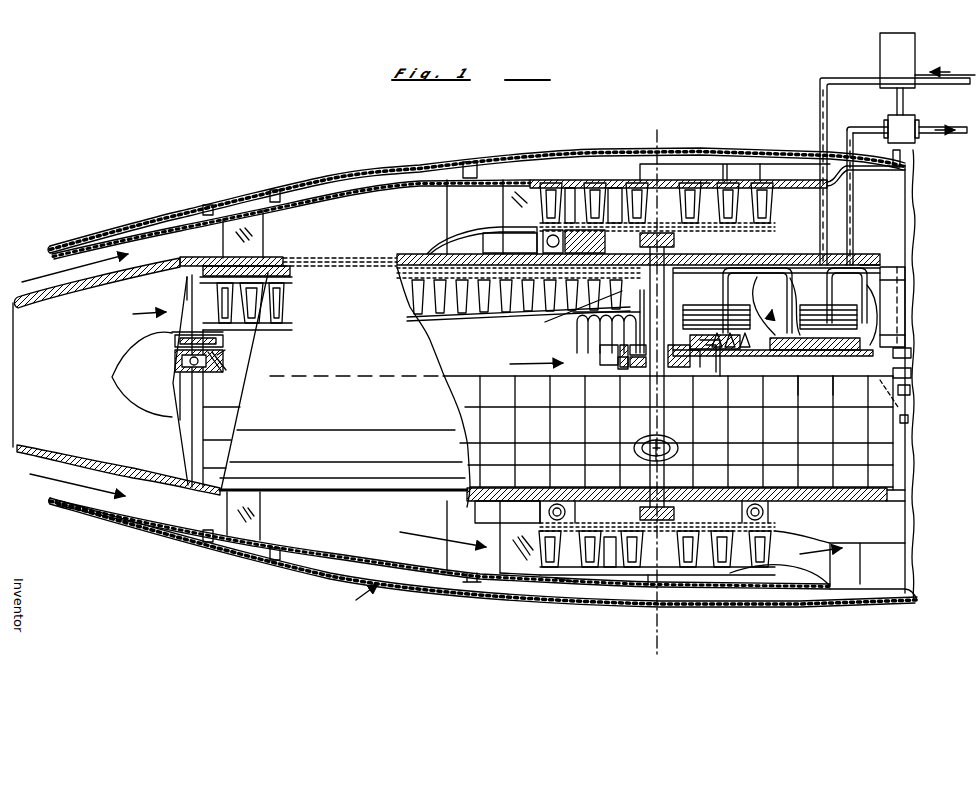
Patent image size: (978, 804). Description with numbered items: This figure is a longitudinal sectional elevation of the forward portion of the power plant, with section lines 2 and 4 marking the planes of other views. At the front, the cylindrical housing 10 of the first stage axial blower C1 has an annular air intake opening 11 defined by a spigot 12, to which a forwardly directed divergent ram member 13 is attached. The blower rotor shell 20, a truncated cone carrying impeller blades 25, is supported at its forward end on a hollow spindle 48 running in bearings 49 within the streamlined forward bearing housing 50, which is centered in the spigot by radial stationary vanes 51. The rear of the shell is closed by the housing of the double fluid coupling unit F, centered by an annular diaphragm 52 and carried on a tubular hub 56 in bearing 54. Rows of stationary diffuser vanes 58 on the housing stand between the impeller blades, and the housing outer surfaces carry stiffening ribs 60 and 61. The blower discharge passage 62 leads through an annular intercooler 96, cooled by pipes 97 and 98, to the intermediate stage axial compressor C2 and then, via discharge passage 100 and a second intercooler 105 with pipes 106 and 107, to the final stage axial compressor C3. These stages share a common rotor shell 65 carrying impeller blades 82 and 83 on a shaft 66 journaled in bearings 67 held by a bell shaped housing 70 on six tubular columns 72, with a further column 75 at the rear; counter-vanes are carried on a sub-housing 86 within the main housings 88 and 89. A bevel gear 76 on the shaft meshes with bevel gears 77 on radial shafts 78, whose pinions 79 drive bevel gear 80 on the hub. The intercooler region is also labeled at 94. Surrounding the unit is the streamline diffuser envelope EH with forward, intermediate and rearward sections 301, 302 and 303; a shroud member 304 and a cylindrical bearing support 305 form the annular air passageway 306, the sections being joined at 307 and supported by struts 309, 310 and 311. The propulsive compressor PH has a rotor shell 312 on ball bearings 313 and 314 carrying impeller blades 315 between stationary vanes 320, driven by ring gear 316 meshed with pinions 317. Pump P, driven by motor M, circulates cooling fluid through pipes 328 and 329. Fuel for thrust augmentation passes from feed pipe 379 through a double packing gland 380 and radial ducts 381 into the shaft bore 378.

The cylindrical housing 10 is at (286, 280).
The annular air intake opening 11 is at (140, 313).
The spigot 12 is at (192, 432).
The divergent ram member 13 is at (60, 407).
The rotor shell 20 is at (490, 314).
The impeller blades 25 is at (252, 321).
The hollow spindle 48 is at (185, 372).
The bearings 49 is at (212, 373).
The forward bearing housing 50 is at (175, 330).
The stationary vanes 51 is at (190, 292).
The annular diaphragm 52 is at (600, 322).
The bearing 54 is at (620, 370).
The tubular hub 56 is at (636, 372).
The stationary diffuser vanes 58 is at (420, 308).
The ribs 60 is at (722, 400).
The ribs 61 is at (808, 404).
The annular passage 62 is at (576, 311).
The common rotor shell 65 is at (800, 380).
The shaft 66 is at (912, 392).
The bearings 67 is at (700, 372).
The bell shaped housing 70 is at (730, 305).
The tubular columns 72 is at (638, 318).
The tubular column 75 is at (908, 280).
The bevel gear 76 is at (666, 368).
The bevel gears 77 is at (628, 348).
The radial shafts 78 is at (615, 250).
The pinions 79 is at (628, 362).
The bevel gear 80 is at (648, 400).
The impeller blades 82 is at (742, 348).
The impeller blades 83 is at (820, 350).
The cylindrical sub-housing 86 is at (785, 297).
The intermediate stage compressor housing 88 is at (735, 208).
The final stage compressor housing 89 is at (862, 266).
The passage 94 is at (738, 345).
The intercooler 96 is at (722, 268).
The pipe 97 is at (820, 85).
The pipe 98 is at (760, 262).
The annular discharge passage 100 is at (840, 292).
The second intercooler 105 is at (905, 300).
The pipe 106 is at (853, 215).
The pipe 107 is at (862, 127).
The forward divergent section 301 is at (270, 556).
The intermediate section 302 is at (568, 590).
The rearward convergent section 303 is at (918, 597).
The cylindrical shroud member 304 is at (318, 480).
The cylindrical bearing support 305 is at (503, 520).
The annular air passageway 306 is at (332, 205).
The joint 307 is at (470, 164).
The streamlined strut 309 is at (240, 230).
The streamlined strut 310 is at (522, 580).
The streamlined strut 311 is at (800, 565).
The inner rotor shell 312 is at (704, 545).
The ball bearing 313 is at (560, 498).
The ball bearing 314 is at (758, 503).
The impeller blades 315 is at (648, 588).
The ring gear 316 is at (612, 178).
The pinions 317 is at (636, 210).
The stationary vanes 320 is at (620, 578).
The pipe 328 is at (921, 125).
The outlet pipe 329 is at (922, 78).
The central bore 378 is at (909, 422).
The lateral feed pipe 379 is at (902, 155).
The double packing gland 380 is at (912, 352).
The radial ducts 381 is at (912, 374).
The section line 2- 2 is at (620, 143).
The section line 4- 4 is at (495, 206).
The motor M is at (897, 74).
The pump P is at (901, 129).
The double fluid coupling unit F is at (530, 364).
The first stage axial blower C1 is at (478, 364).
The intermediate stage axial compressor C2 is at (735, 370).
The final stage axial compressor C3 is at (768, 370).
The propulsive compressor PH is at (583, 178).
The streamline diffuser envelope EH is at (357, 601).